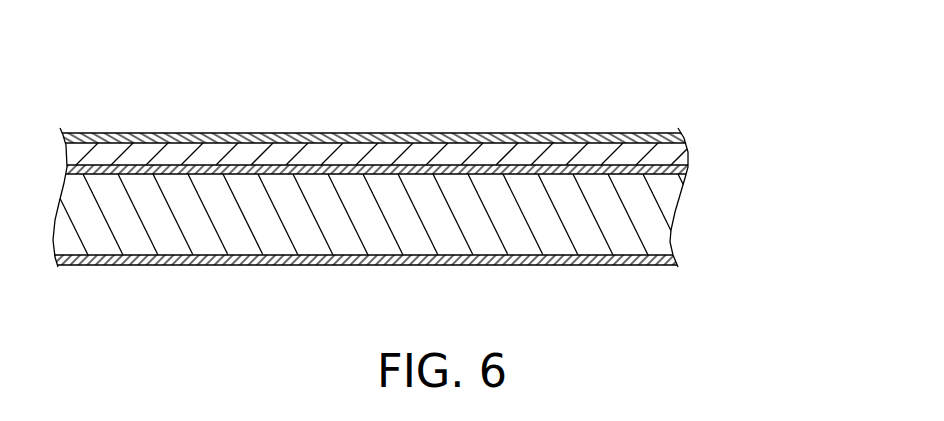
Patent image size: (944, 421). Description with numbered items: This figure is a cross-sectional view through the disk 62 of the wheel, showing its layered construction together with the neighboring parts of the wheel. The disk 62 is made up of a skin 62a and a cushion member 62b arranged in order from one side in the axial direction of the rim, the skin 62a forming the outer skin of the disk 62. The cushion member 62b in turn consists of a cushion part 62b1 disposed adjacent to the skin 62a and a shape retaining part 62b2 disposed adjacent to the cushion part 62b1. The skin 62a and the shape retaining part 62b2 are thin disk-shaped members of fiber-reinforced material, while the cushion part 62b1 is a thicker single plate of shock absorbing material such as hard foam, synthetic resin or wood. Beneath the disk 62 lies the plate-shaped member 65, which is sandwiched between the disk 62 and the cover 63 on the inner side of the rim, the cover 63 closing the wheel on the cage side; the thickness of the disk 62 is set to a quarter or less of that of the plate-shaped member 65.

The disk 62 is at (461, 128).
The skin 62a is at (650, 133).
The cushion member 62b is at (441, 160).
The cushion part 62b1 is at (687, 142).
The shape retaining part 62b2 is at (687, 168).
The plate-shaped member 65 is at (672, 241).
The cover 63 is at (637, 265).